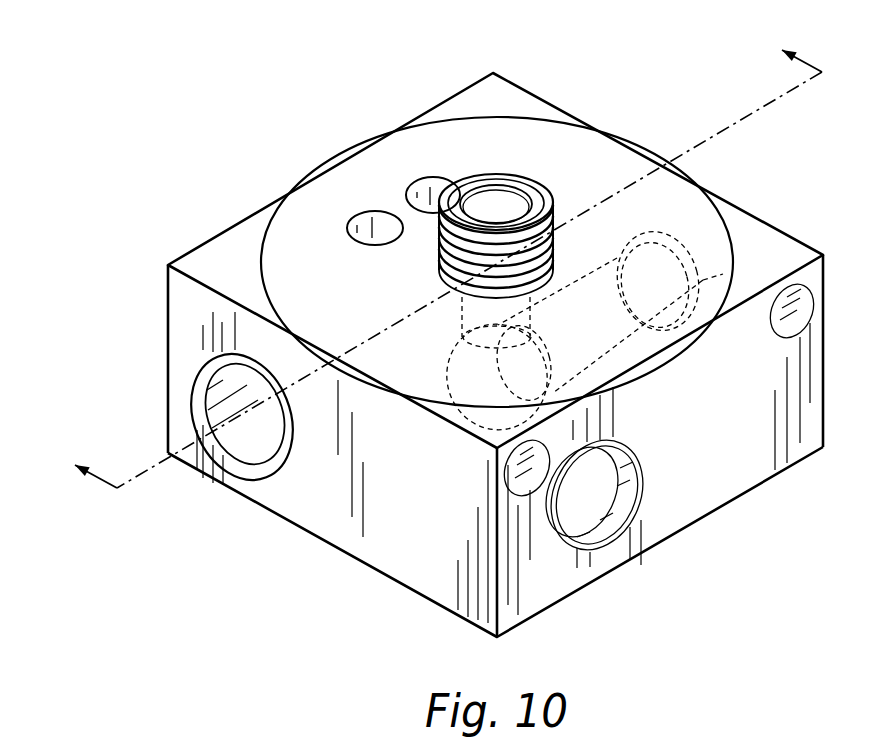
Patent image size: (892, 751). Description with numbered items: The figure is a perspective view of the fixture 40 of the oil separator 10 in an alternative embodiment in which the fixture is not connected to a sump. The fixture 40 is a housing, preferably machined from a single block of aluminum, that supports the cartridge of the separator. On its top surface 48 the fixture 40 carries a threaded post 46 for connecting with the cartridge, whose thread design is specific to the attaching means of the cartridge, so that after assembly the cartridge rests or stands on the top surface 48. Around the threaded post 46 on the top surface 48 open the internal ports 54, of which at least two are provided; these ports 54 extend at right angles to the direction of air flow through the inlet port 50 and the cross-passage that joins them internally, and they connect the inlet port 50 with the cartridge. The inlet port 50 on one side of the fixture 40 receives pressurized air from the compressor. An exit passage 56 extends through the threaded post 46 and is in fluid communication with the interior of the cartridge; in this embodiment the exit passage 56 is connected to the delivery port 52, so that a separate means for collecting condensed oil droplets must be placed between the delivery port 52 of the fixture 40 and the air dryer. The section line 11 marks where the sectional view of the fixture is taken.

The oil separator 10 is at (140, 103).
The fixture 40 is at (397, 532).
The threaded post 46 is at (552, 242).
The top surface 48 is at (313, 280).
The inlet port 50 is at (262, 435).
The delivery port 52 is at (712, 278).
The internal ports 54 is at (413, 183).
The exit passage 56 is at (493, 212).
The section line 11- 11 is at (430, 256).